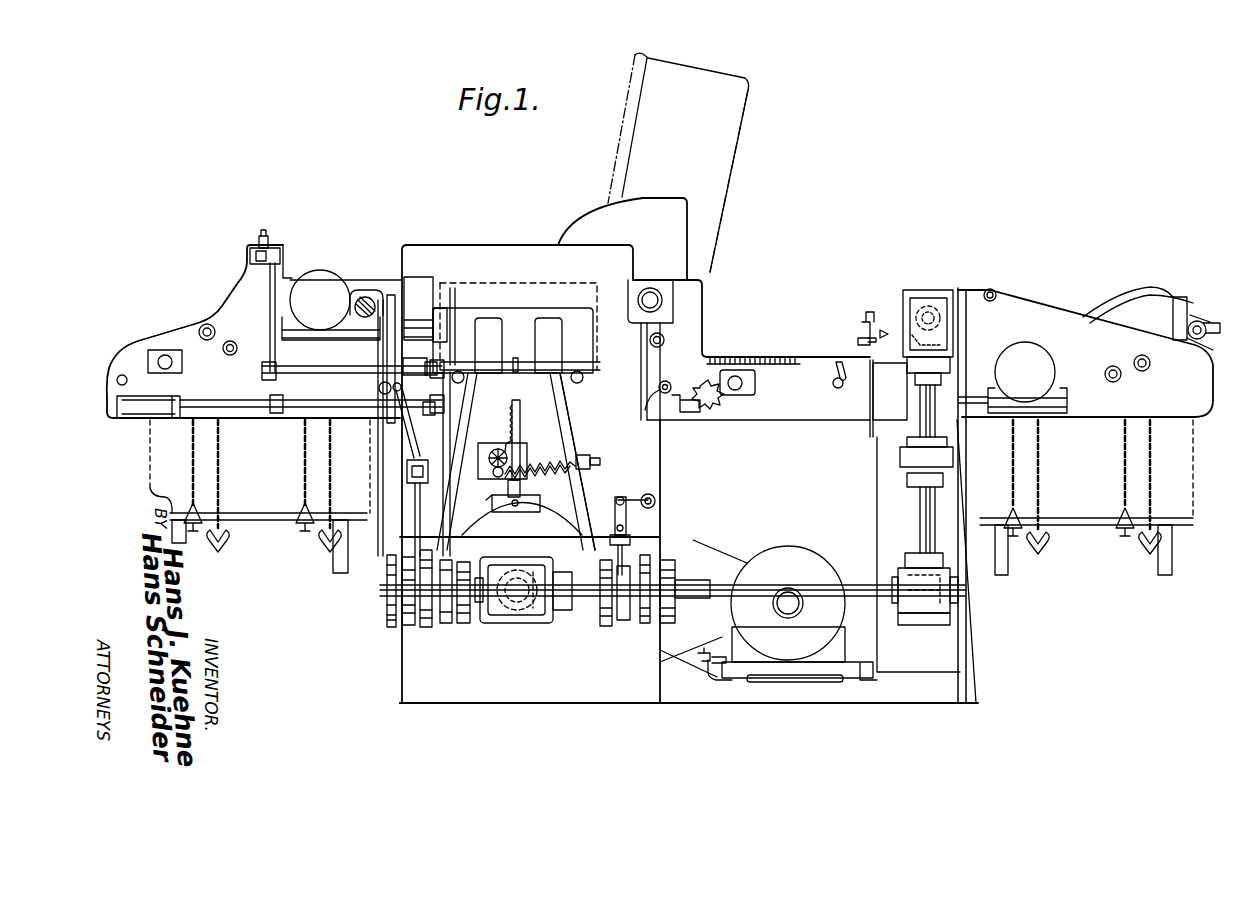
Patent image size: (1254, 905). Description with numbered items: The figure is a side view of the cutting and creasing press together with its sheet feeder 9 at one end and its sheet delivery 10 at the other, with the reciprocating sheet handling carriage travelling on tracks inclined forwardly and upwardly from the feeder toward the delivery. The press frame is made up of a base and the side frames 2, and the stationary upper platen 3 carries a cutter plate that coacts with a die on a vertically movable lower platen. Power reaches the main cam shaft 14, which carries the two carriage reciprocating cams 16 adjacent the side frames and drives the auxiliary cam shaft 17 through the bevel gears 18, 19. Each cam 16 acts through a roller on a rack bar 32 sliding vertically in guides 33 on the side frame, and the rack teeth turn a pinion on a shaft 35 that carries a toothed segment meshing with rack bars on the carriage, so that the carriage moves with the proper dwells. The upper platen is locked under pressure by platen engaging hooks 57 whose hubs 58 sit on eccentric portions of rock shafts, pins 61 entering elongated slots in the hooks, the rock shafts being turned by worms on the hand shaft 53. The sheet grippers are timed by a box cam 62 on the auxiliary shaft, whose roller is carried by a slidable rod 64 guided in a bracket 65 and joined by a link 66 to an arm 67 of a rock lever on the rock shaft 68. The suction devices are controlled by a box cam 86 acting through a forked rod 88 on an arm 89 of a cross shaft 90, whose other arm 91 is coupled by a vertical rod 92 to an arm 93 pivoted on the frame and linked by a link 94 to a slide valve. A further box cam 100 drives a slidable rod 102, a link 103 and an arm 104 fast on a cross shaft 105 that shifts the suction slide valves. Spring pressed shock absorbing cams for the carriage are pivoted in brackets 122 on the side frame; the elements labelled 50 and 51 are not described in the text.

The side frames 2 is at (583, 488).
The stationary upper platen 3 is at (492, 255).
The sheet feeder 9 is at (1089, 431).
The sheet delivery 10 is at (260, 496).
The main cam shaft 14 is at (514, 598).
The carriage reciprocating cams 16 is at (530, 561).
The auxiliary cam shaft 17 is at (588, 594).
The bevel gear 18 is at (519, 612).
The bevel gear 19 is at (532, 608).
The rack bar 32 is at (520, 445).
The upper guide 33 is at (523, 457).
The shaft 35 is at (495, 447).
The pivot 50 is at (651, 289).
The bracket 51 is at (672, 291).
The hand shaft 53 is at (738, 128).
The platen engaging hooks 57 is at (514, 318).
The hubs 58 is at (526, 360).
The pins 61 is at (515, 362).
The box cam 62 is at (425, 618).
The vertically slidable rod 64 is at (415, 500).
The bracket 65 is at (407, 472).
The link 66 is at (406, 440).
The arm 67 is at (401, 388).
The rock shaft 68 is at (356, 393).
The box cam 86 is at (450, 612).
The forked rod 88 is at (443, 553).
The arm 89 is at (422, 362).
The cross shaft 90 is at (320, 375).
The arm 91 is at (270, 378).
The vertical rod 92 is at (270, 320).
The arm 93 is at (250, 254).
The link 94 is at (266, 232).
The box cam 100 is at (612, 617).
The vertically slidable rod 102 is at (618, 546).
The link 103 is at (614, 514).
The arm 104 is at (628, 495).
The cross shaft 105 is at (655, 501).
The bracket 122 is at (168, 368).